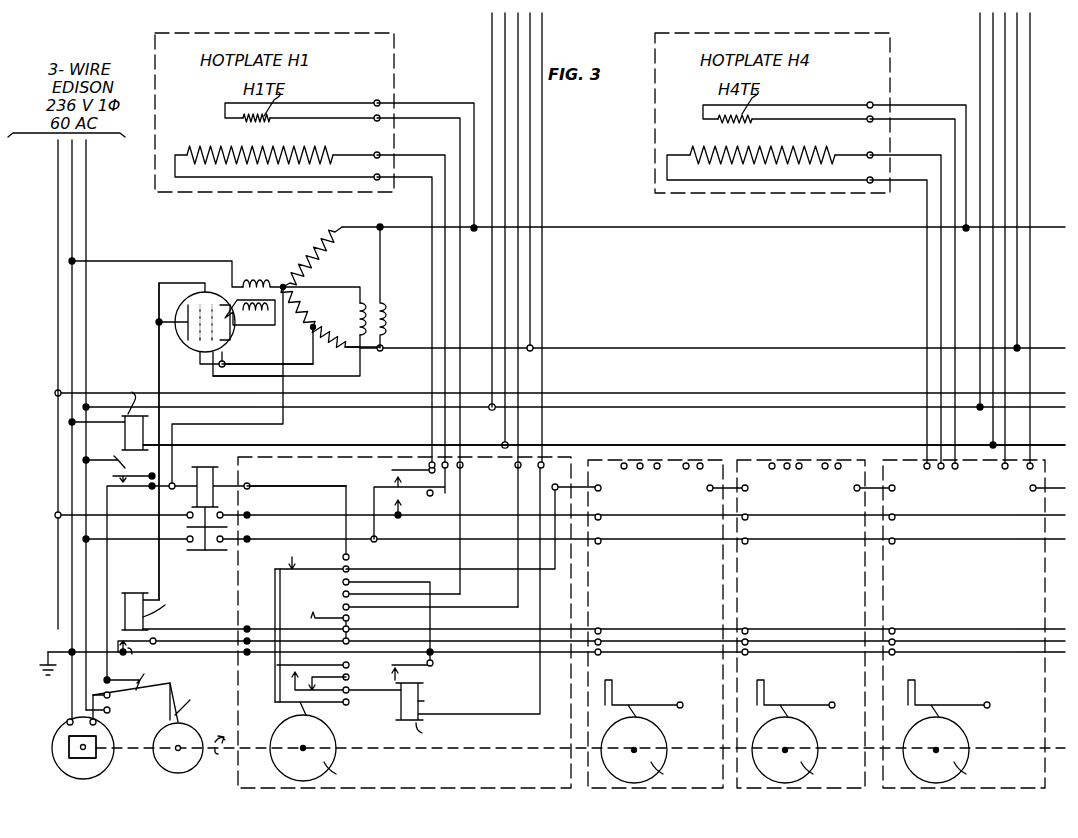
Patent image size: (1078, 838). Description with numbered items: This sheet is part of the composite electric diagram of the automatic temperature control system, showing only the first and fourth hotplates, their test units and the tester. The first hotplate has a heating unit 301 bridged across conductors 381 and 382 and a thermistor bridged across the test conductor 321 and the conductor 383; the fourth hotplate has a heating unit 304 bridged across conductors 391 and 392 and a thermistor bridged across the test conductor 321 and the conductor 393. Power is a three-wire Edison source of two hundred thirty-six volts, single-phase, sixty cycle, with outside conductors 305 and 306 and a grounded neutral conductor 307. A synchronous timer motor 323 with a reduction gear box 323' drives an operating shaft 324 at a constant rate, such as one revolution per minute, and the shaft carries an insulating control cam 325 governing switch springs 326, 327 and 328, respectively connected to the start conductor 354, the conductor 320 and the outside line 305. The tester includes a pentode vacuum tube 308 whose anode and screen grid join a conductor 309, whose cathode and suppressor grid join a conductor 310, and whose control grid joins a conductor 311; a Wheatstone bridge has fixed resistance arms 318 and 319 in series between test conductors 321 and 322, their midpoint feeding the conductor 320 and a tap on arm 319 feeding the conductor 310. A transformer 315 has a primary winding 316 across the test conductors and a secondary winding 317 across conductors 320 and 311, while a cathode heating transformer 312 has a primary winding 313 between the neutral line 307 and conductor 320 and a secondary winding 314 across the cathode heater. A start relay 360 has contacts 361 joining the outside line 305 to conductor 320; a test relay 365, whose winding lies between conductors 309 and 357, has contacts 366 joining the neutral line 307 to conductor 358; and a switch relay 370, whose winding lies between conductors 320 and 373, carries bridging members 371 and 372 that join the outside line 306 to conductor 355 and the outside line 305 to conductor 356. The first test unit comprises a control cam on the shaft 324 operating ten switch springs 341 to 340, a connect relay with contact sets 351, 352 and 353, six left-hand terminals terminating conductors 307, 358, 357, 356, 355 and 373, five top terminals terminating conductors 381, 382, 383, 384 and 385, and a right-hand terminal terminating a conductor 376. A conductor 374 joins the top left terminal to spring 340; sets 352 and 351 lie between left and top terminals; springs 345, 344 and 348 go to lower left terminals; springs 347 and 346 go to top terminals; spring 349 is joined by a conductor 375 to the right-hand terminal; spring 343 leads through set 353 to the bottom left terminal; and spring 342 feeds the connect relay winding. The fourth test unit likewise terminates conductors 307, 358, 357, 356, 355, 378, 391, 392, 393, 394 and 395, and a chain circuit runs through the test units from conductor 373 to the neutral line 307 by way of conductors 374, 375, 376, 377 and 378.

The heating unit 301 is at (204, 147).
The heating unit 304 is at (699, 143).
The outside conductor 305 is at (86, 175).
The outside conductor 306 is at (72, 193).
The grounded neutral conductor 307 is at (86, 215).
The vacuum tube 308 is at (182, 352).
The conductor 309 is at (158, 338).
The conductor 310 is at (274, 364).
The conductor 311 is at (208, 376).
The cathode heating transformer 312 is at (282, 236).
The primary winding 313 is at (256, 285).
The secondary winding 314 is at (268, 326).
The transformer 315 is at (405, 380).
The primary winding 316 is at (385, 332).
The secondary winding 317 is at (354, 326).
The fixed resistance arm 318 is at (323, 262).
The fixed resistance arm 319 is at (336, 348).
The conductor 320 is at (272, 420).
The test conductor 321 is at (441, 104).
The test conductor 322 is at (601, 348).
The synchronous timer motor 323 is at (93, 754).
The reduction gear box 323' is at (63, 729).
The operating shaft 324 is at (128, 748).
The insulating control cam 325 is at (188, 732).
The switch spring 326 is at (176, 692).
The switch spring 327 is at (142, 684).
The switch spring 328 is at (145, 699).
The switch spring 340 is at (327, 551).
The switch spring 341 is at (342, 704).
The switch spring 342 is at (338, 690).
The switch spring 343 is at (329, 666).
The switch spring 344 is at (334, 663).
The switch spring 345 is at (346, 618).
The switch spring 346 is at (312, 605).
The switch spring 347 is at (298, 596).
The switch spring 348 is at (367, 615).
The switch spring 349 is at (312, 564).
The set of contacts 351 is at (408, 480).
The set of contacts 352 is at (412, 503).
The set of contacts 353 is at (406, 672).
The start conductor 354 is at (354, 444).
The conductor 355 is at (244, 510).
The conductor 356 is at (244, 535).
The conductor 357 is at (190, 630).
The conductor 358 is at (230, 641).
The start relay 360 is at (126, 434).
The set of contacts 361 is at (119, 472).
The test relay 365 is at (146, 583).
The set of contacts 366 is at (127, 658).
The switch relay 370 is at (214, 467).
The contact bridging member 371 is at (180, 518).
The contact bridging member 372 is at (175, 545).
The conductor 373 is at (244, 482).
The conductor 374 is at (348, 482).
The conductor 375 is at (462, 568).
The conductor 376 is at (590, 498).
The conductor 377 is at (733, 498).
The conductor 378 is at (883, 498).
The conductor 381 is at (441, 180).
The conductor 382 is at (441, 155).
The conductor 383 is at (441, 121).
The conductor 384 is at (530, 420).
The conductor 385 is at (542, 440).
The conductor 391 is at (934, 182).
The conductor 392 is at (934, 157).
The conductor 393 is at (934, 123).
The conductor 394 is at (1013, 426).
The conductor 395 is at (1025, 439).